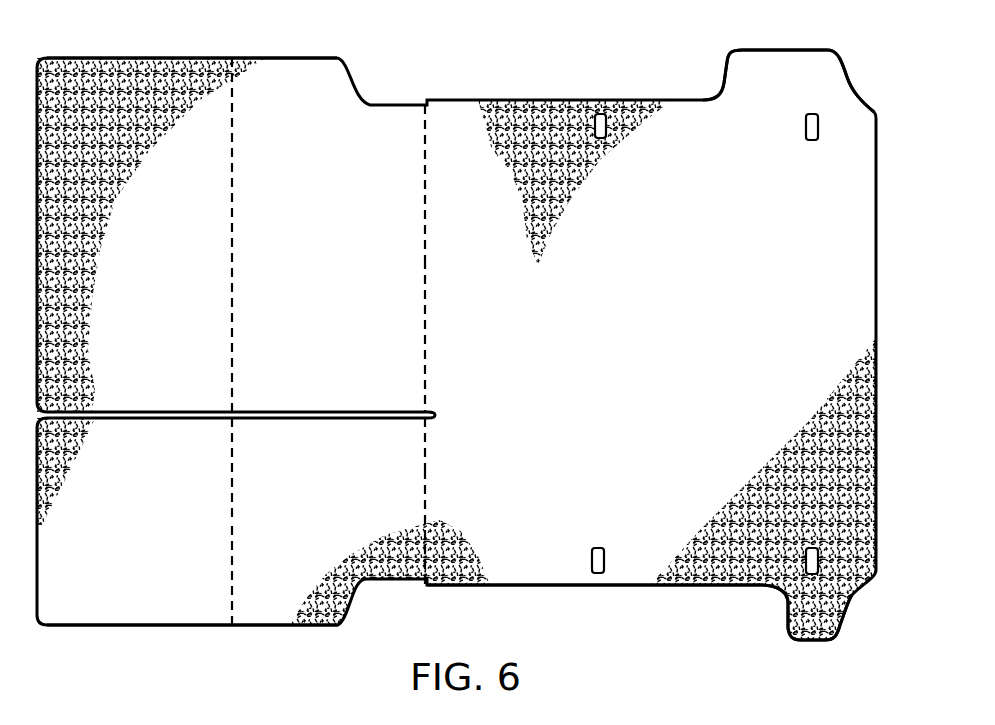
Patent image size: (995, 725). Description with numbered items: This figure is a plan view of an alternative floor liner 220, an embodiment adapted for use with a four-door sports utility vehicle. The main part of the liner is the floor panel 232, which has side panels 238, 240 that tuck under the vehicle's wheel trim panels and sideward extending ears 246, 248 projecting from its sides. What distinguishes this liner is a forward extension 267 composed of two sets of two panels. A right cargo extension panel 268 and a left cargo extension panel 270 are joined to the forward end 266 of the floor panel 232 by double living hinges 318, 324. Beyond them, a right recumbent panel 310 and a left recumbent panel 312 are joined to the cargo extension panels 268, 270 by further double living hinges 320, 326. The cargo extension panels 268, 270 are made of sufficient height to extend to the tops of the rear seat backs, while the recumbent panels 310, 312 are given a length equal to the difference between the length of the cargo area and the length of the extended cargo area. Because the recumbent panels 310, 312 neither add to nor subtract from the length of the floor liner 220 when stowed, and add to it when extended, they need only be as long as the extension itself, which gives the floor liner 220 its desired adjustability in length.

The floor liner 220 is at (474, 78).
The floor panel 232 is at (713, 320).
The side panel 238 is at (565, 100).
The side panel 240 is at (552, 586).
The sideward extending ear 246 is at (811, 67).
The sideward extending ear 248 is at (785, 617).
The forward end 266 is at (426, 320).
The forward extension 267 is at (270, 113).
The right cargo extension panel 268 is at (345, 257).
The left cargo extension panel 270 is at (345, 507).
The right recumbent panel 310 is at (180, 257).
The left recumbent panel 312 is at (173, 507).
The double living hinge 318 is at (426, 217).
The double living hinge 320 is at (233, 177).
The double living hinge 324 is at (426, 492).
The double living hinge 326 is at (233, 486).